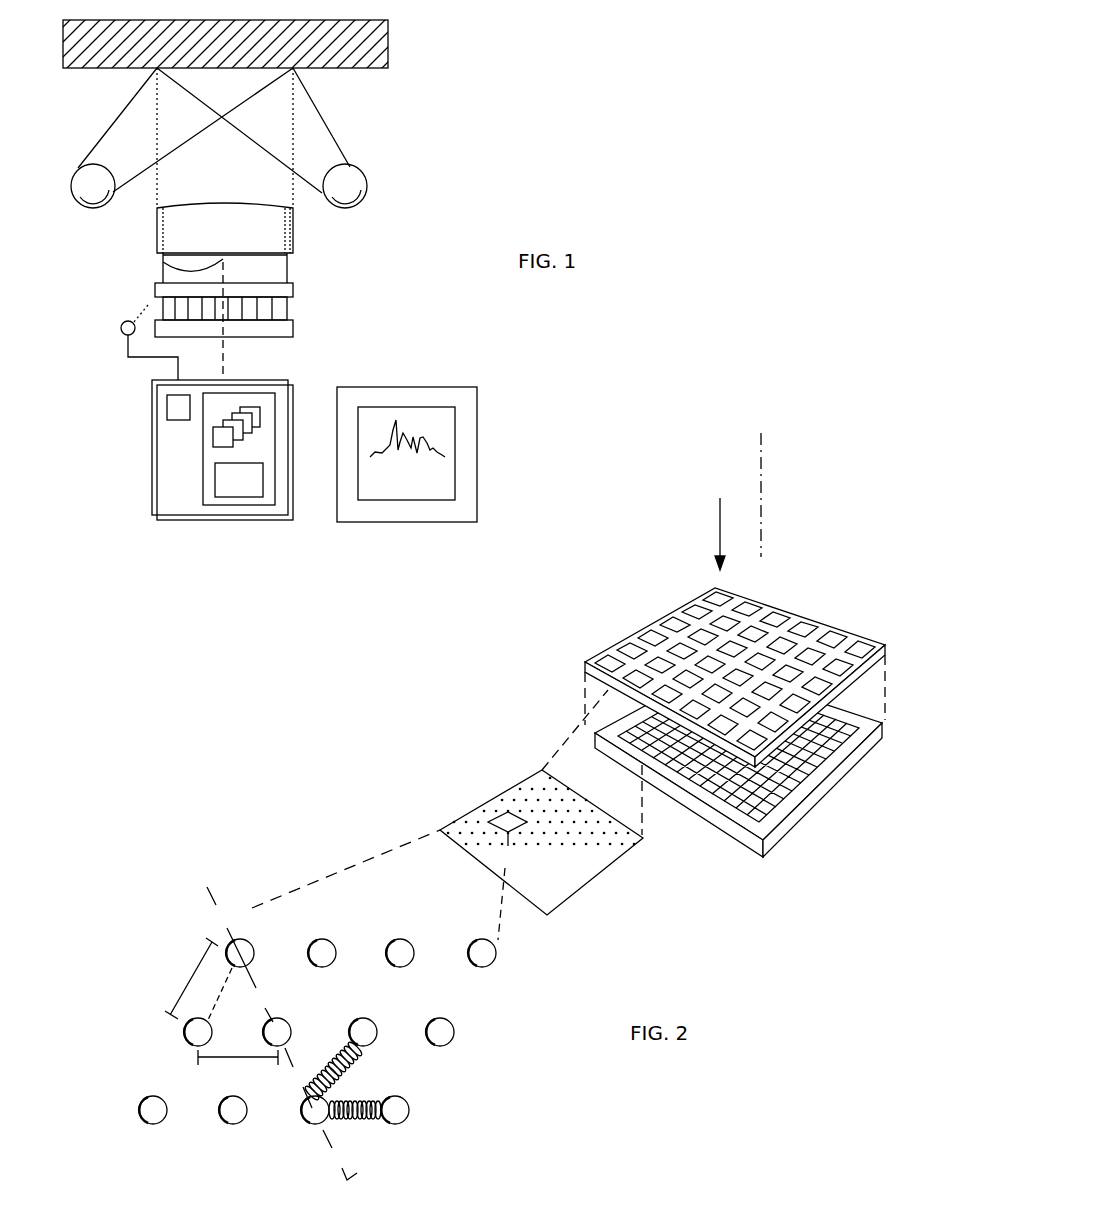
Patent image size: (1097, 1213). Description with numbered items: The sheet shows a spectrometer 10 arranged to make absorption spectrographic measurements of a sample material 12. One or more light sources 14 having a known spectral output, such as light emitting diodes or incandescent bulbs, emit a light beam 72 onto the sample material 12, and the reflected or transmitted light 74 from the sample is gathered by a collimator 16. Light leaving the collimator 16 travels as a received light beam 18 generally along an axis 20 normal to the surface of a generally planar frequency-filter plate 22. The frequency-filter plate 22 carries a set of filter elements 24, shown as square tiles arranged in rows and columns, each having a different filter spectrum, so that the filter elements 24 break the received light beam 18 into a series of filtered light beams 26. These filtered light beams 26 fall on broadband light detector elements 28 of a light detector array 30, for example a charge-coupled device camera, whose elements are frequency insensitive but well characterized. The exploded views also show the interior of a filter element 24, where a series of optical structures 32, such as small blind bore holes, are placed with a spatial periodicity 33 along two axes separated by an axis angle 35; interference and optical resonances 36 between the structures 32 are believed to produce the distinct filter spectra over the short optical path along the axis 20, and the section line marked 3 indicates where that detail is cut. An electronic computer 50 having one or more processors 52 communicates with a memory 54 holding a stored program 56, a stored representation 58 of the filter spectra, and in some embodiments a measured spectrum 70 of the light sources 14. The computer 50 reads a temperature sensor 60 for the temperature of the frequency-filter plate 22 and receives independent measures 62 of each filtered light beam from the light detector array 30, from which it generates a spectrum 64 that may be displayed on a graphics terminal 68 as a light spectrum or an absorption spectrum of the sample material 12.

In FIG. 1, the spectrometer 10 is at (495, 145).
In FIG. 1, the sample material 12 is at (387, 38).
In FIG. 1, the light sources 14 is at (72, 188).
In FIG. 1, the collimator 16 is at (183, 228).
In FIG. 1, the received light beam 18 is at (265, 268).
In FIG. 2, the received light beam 18 is at (718, 527).
In FIG. 1, the axis 20 is at (160, 263).
In FIG. 2, the axis 20 is at (762, 500).
In FIG. 1, the frequency-filter plate 22 is at (295, 289).
In FIG. 2, the frequency-filter plate 22 is at (662, 751).
In FIG. 2, the filter elements 24 is at (713, 602).
In FIG. 1, the filtered light beams 26 is at (287, 314).
In FIG. 2, the light detector elements 28 is at (808, 778).
In FIG. 1, the light detector array 30 is at (293, 333).
In FIG. 2, the light detector array 30 is at (756, 775).
In FIG. 2, the optical structures 32 is at (615, 838).
In FIG. 2, the spatial periodicity 33 is at (200, 971).
In FIG. 2, the axis angle 35 is at (214, 1028).
In FIG. 2, the optical resonances 36 is at (370, 1098).
In FIG. 1, the electronic computer 50 is at (152, 467).
In FIG. 1, the processors 52 is at (167, 404).
In FIG. 1, the memory 54 is at (203, 490).
In FIG. 1, the stored program 56 is at (238, 486).
In FIG. 1, the stored representation of the filter spectra 58 is at (302, 401).
In FIG. 1, the temperature sensor 60 is at (121, 324).
In FIG. 1, the independent measures 62 is at (225, 363).
In FIG. 1, the spectrum 64 is at (442, 425).
In FIG. 1, the graphics terminal 68 is at (477, 440).
In FIG. 1, the measured spectrum of the light sources 70 is at (258, 430).
In FIG. 1, the light beam 72 is at (123, 115).
In FIG. 1, the reflected or transmitted light 74 is at (240, 177).
In FIG. 2, the section line 3- 3 is at (227, 875).